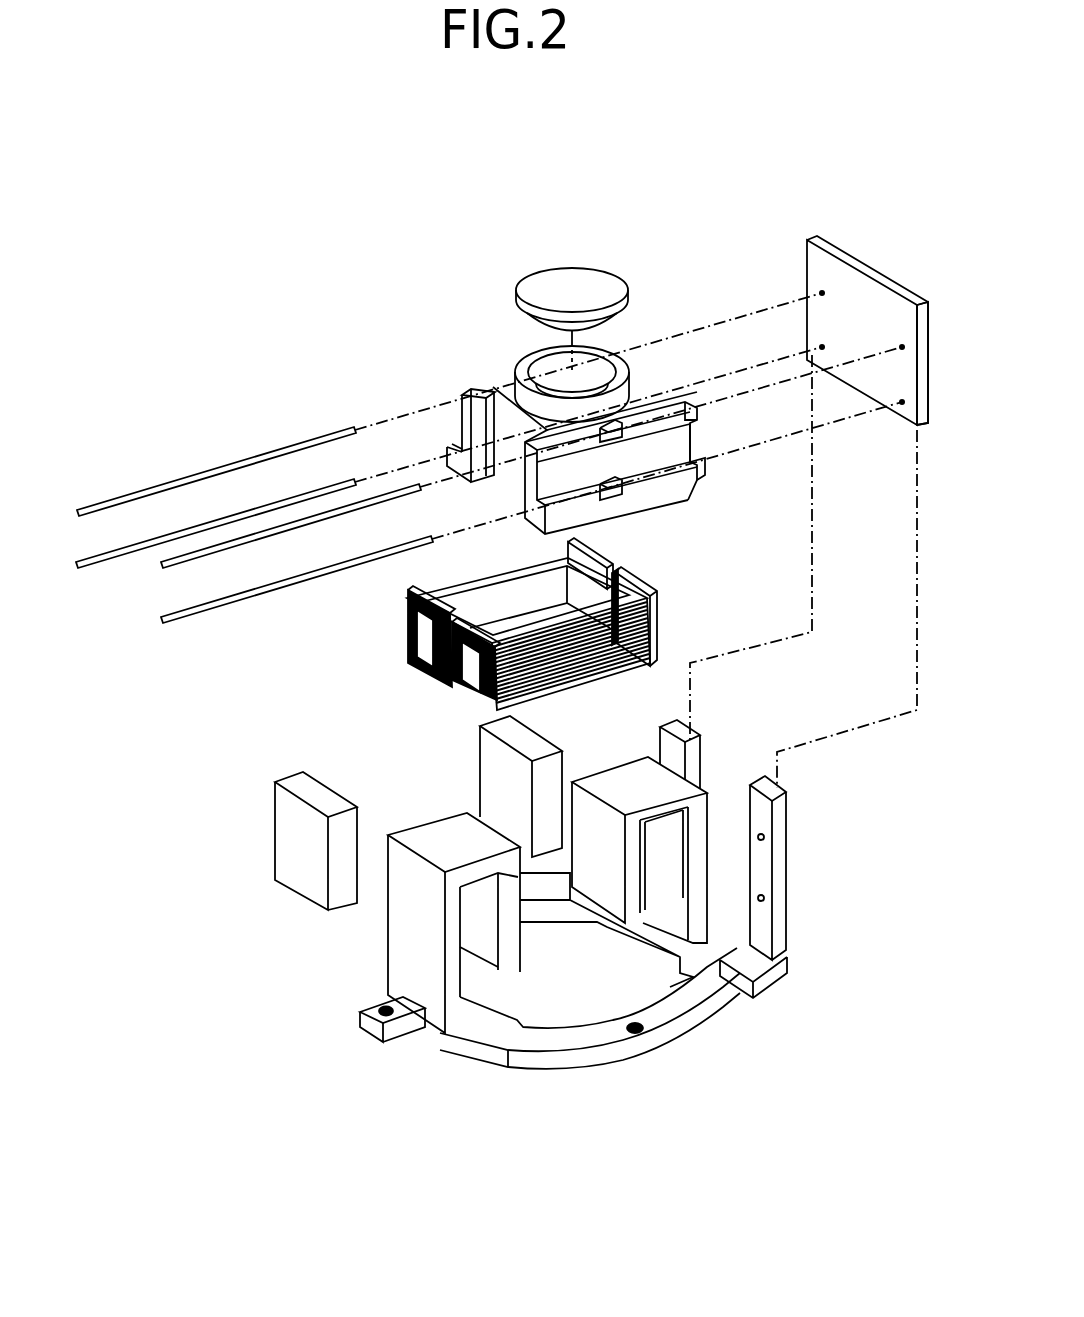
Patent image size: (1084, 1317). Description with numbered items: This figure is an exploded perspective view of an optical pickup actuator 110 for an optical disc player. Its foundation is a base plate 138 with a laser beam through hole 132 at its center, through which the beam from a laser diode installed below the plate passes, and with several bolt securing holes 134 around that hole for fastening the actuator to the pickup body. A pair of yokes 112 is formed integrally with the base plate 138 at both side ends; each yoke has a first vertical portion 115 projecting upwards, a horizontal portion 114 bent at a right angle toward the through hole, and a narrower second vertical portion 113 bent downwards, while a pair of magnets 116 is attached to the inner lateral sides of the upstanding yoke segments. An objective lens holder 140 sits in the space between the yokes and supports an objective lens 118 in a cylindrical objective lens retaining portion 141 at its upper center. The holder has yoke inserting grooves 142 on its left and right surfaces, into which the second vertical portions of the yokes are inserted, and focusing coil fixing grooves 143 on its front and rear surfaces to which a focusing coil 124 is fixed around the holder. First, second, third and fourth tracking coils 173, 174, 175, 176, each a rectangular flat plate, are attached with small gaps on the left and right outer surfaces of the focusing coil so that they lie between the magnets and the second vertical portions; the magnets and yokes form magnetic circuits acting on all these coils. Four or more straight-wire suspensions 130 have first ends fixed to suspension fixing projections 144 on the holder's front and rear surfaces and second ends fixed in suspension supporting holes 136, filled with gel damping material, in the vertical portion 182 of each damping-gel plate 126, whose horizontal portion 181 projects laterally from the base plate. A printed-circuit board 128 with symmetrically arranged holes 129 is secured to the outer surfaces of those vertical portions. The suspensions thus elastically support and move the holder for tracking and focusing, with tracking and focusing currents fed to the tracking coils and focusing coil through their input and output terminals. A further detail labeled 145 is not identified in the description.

The optical pickup actuator 110 is at (213, 213).
The yoke 112 is at (435, 963).
The second vertical portion 113 is at (507, 940).
The horizontal portion 114 is at (653, 752).
The first vertical portion 115 is at (407, 915).
The magnet 116 is at (283, 812).
The objective lens 118 is at (565, 288).
The focusing coil 124 is at (600, 680).
The damping-gel plate 126 is at (693, 754).
The printed-circuit board 128 is at (840, 307).
The hole 129 is at (902, 347).
The suspension 130 is at (313, 437).
The laser beam through hole 132 is at (557, 993).
The bolt securing hole 134 is at (388, 1010).
The suspension supporting hole 136 is at (763, 902).
The base plate 138 is at (530, 1040).
The objective lens holder 140 is at (500, 383).
The objective lens retaining portion 141 is at (602, 365).
The yoke inserting groove 142 is at (503, 433).
The focusing coil fixing groove 143 is at (673, 440).
The suspension fixing projection 144 is at (683, 425).
The fiber retaining nub 145 is at (598, 478).
The first tracking coil 173 is at (407, 612).
The second tracking coil 174 is at (590, 679).
The third tracking coil 175 is at (655, 592).
The fourth tracking coil 176 is at (607, 555).
The horizontal portion 181 is at (767, 943).
The vertical portion 182 is at (783, 830).